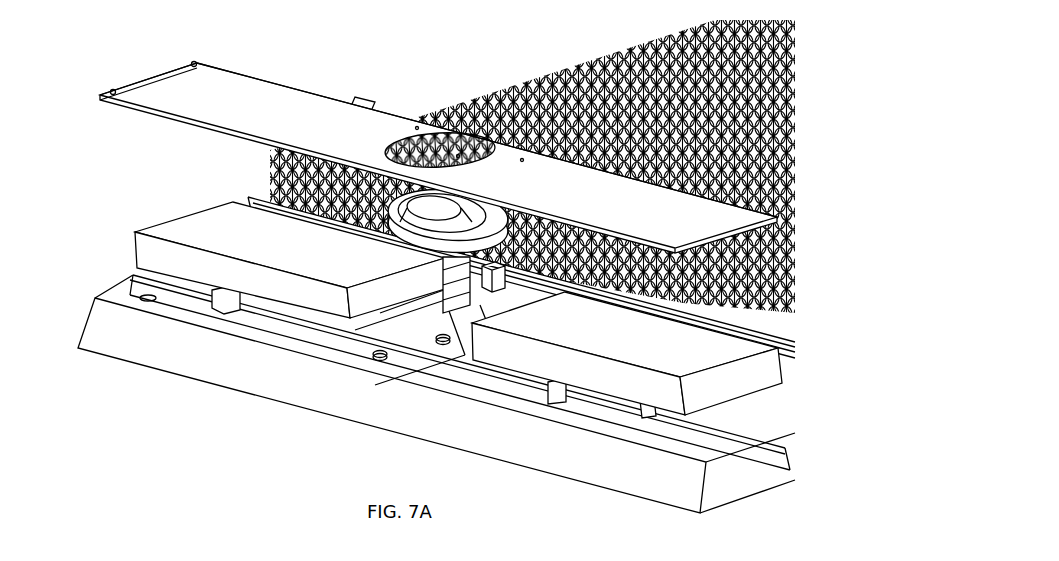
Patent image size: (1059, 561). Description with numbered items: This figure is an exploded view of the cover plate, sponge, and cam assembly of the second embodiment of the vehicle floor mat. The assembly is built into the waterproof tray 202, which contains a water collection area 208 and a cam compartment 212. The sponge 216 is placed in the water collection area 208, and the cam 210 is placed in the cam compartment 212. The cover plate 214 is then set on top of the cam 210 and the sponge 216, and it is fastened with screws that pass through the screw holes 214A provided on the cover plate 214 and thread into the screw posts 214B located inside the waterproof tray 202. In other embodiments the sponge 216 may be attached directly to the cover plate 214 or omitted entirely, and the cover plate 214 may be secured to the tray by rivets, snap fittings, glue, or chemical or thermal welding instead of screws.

The waterproof tray 202 is at (227, 358).
The water collection area 208 is at (263, 323).
The cam 210 is at (422, 223).
The cam compartment 212 is at (453, 355).
The cover plate 214 is at (257, 105).
The screw holes 214A is at (192, 64).
The screw posts 214B is at (443, 343).
The sponge 216 is at (240, 232).